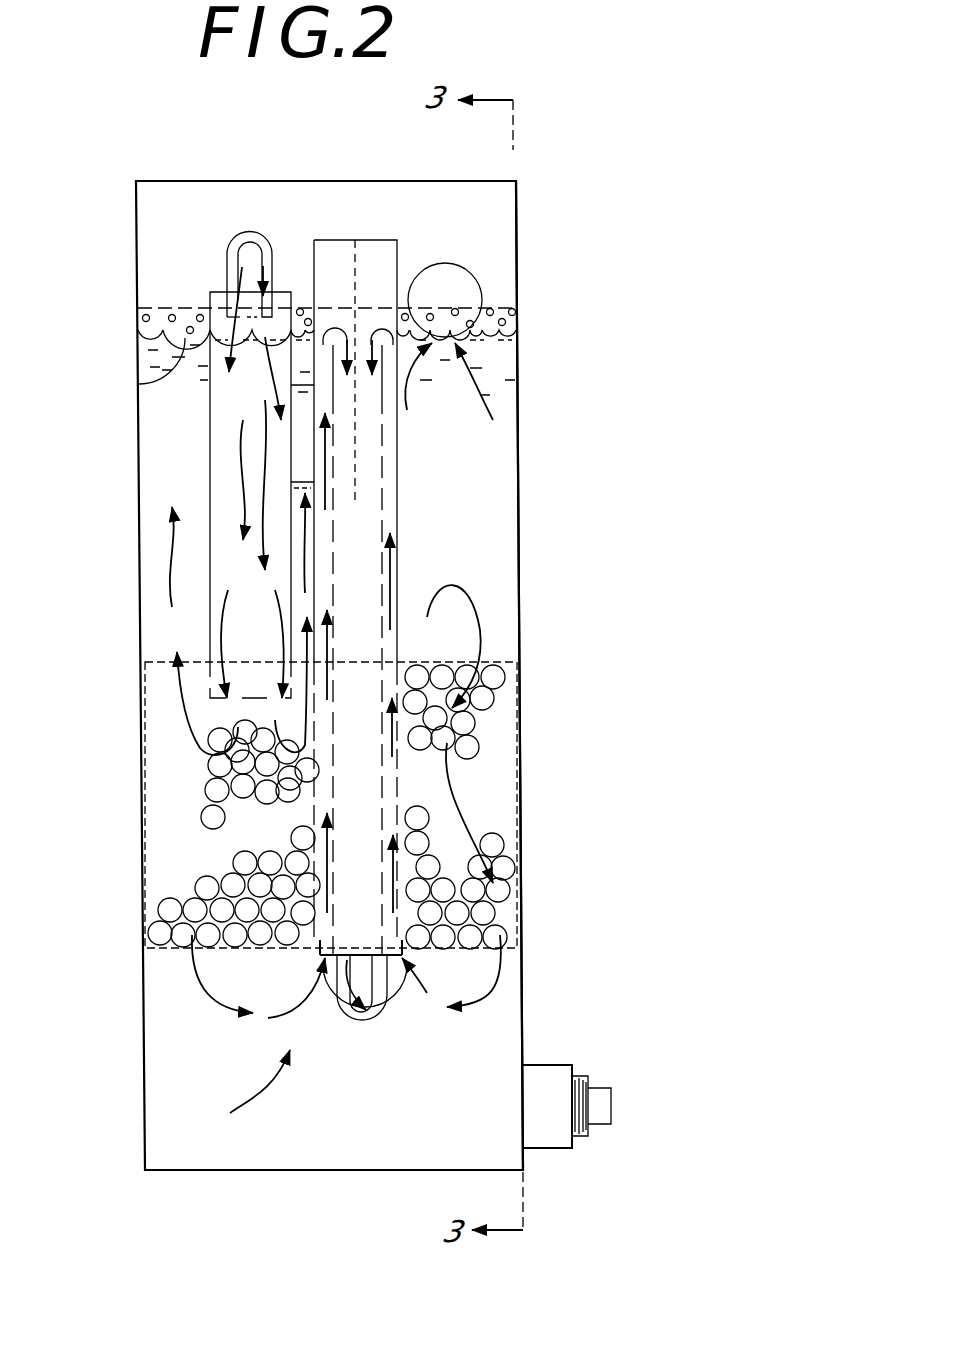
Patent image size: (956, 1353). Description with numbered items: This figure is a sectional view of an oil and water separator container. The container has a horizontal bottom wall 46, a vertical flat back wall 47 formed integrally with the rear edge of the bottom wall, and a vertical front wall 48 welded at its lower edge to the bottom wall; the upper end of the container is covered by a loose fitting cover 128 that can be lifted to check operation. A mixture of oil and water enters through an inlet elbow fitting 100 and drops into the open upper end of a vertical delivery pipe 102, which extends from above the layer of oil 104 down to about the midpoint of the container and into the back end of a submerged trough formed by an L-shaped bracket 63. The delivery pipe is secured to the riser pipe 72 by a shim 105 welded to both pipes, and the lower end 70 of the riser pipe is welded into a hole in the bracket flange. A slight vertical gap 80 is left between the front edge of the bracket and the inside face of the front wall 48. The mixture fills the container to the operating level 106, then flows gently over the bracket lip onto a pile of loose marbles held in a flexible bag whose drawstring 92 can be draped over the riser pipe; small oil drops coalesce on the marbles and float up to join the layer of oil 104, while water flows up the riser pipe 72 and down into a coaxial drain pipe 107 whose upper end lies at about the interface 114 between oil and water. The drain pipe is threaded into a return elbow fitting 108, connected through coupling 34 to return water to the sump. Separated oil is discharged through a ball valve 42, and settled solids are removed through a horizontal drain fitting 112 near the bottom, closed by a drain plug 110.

The coupling 34 is at (397, 1020).
The ball valve 42 is at (458, 268).
The bottom wall 46 is at (390, 1170).
The back wall 47 is at (138, 425).
The front wall 48 is at (518, 398).
The L-shaped bracket 63 is at (497, 660).
The lower end of riser pipe 70 is at (338, 1017).
The riser pipe 72 is at (397, 258).
The vertical gap 80 is at (518, 755).
The drawstring 92 is at (355, 240).
The inlet elbow fitting 100 is at (275, 246).
The delivery pipe 102 is at (205, 298).
The layer of oil 104 is at (138, 330).
The shim 105 is at (305, 450).
The operating level 106 is at (157, 312).
The drain pipe 107 is at (403, 983).
The return elbow fitting 108 is at (358, 1028).
The drain plug 110 is at (598, 1090).
The drain fitting 112 is at (552, 1065).
The interface 114 is at (138, 378).
The cover 128 is at (440, 150).